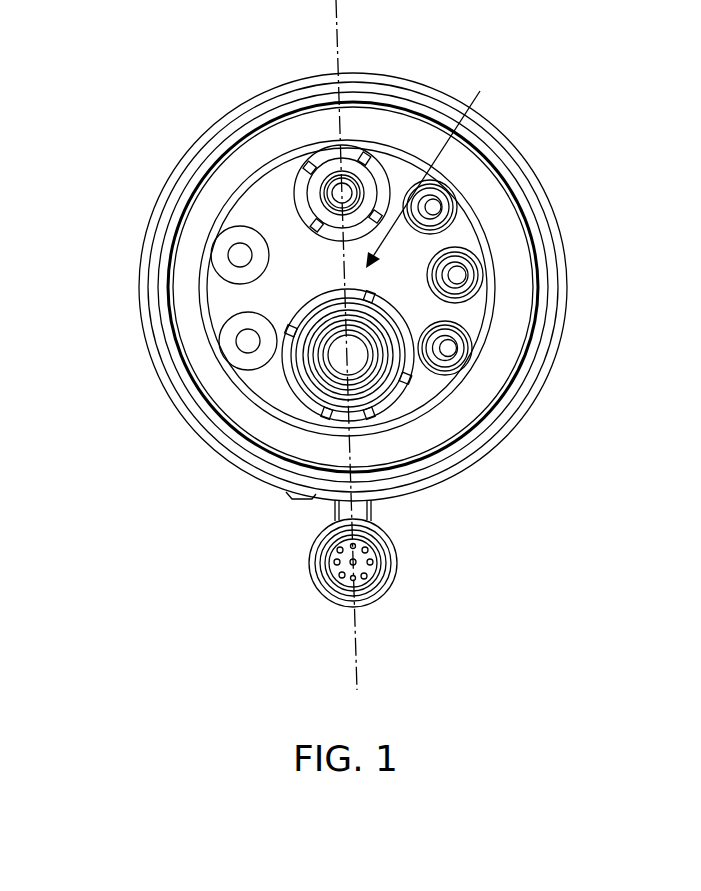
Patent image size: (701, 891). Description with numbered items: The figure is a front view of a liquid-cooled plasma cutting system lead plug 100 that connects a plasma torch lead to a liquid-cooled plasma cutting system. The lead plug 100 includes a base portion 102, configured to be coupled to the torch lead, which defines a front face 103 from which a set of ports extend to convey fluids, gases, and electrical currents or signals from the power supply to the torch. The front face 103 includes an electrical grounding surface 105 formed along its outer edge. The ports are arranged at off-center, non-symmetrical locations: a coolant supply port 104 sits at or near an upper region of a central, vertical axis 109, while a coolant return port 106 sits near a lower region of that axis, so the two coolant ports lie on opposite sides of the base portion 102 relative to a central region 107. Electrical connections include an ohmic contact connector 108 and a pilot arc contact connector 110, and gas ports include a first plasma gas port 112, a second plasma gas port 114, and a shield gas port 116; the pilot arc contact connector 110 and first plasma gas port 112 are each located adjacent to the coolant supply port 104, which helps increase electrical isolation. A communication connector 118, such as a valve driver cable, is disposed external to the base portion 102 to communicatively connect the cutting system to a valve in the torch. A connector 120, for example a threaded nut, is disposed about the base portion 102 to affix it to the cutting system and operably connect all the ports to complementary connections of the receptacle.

The lead plug 100 is at (114, 101).
The base portion 102 is at (276, 183).
The front face 103 is at (429, 396).
The coolant supply port 104 is at (349, 148).
The electrical grounding surface 105 is at (476, 170).
The coolant return port 106 is at (370, 415).
The central region 107 is at (431, 164).
The ohmic contact connector 108 is at (224, 323).
The central, vertical axis 109 is at (363, 645).
The pilot arc contact connector 110 is at (222, 272).
The first plasma gas port 112 is at (457, 208).
The second plasma gas port 114 is at (483, 276).
The shield gas port 116 is at (470, 350).
The communication connector 118 is at (311, 562).
The connector 120 is at (176, 415).